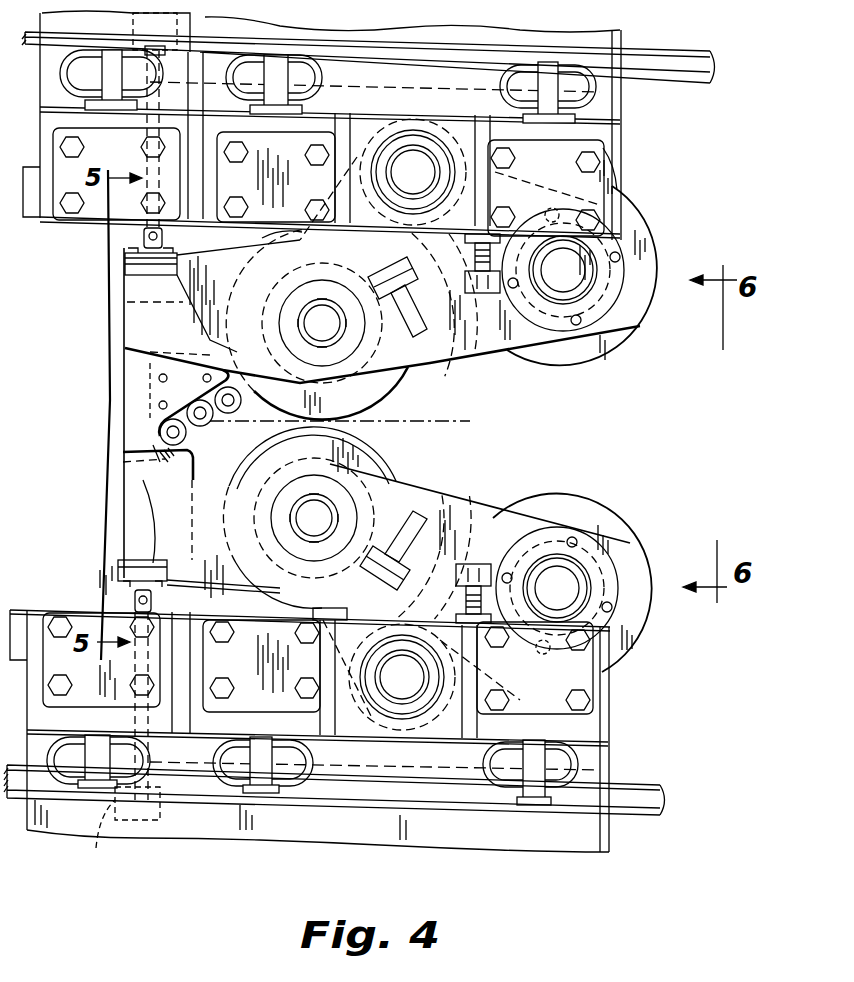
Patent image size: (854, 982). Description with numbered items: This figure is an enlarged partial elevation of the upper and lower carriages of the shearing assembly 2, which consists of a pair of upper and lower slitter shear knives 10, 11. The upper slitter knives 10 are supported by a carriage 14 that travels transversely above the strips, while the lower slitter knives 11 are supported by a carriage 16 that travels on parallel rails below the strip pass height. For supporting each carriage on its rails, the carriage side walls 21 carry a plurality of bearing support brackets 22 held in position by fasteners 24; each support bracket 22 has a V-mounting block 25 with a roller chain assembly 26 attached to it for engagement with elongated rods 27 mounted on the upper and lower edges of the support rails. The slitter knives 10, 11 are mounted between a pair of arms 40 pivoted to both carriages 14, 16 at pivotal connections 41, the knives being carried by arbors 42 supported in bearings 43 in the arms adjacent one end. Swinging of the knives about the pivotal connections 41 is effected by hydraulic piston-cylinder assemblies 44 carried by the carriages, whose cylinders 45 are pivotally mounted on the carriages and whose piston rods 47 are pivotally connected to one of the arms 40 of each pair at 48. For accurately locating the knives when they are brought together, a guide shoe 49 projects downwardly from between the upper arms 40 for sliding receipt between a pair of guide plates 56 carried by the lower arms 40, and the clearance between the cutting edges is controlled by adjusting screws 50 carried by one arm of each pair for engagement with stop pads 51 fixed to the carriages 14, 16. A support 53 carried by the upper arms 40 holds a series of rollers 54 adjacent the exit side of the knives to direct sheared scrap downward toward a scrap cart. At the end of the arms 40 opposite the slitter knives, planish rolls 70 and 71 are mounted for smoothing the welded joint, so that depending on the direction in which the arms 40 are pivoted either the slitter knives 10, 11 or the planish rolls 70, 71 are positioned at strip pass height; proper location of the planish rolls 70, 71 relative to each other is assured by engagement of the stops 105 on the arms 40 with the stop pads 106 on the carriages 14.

The shearing assembly 2 is at (437, 381).
The upper slitter shear knives 10 is at (383, 398).
The lower slitter shear knives 11 is at (387, 475).
The upper carriage 14 is at (636, 171).
The lower carriage 16 is at (624, 742).
The carriage side walls 21 is at (612, 110).
The bearing support brackets 22 is at (327, 125).
The fasteners 24 is at (620, 187).
The V-mounting block 25 is at (288, 75).
The roller chain assembly 26 is at (248, 63).
The elongated rods 27 is at (668, 62).
The arms 40 is at (487, 350).
The pivotal connections 41 is at (420, 155).
The arbors 42 is at (313, 303).
The bearings 43 is at (298, 333).
The hydraulic piston-cylinder assemblies 44 is at (126, 18).
The cylinders 45 is at (94, 833).
The piston rods 47 is at (142, 137).
The pivotal connection of piston rod to arm 48 is at (143, 237).
The guide shoe 49 is at (133, 467).
The adjusting screws 50 is at (472, 248).
The stop pads 51 is at (513, 227).
The support 53 is at (135, 378).
The rollers 54 is at (183, 440).
The guide plates 56 is at (133, 522).
The upper planish roll 70 is at (630, 332).
The lower planish roll 71 is at (597, 510).
The stops 105 is at (383, 315).
The stop pads 106 is at (317, 610).